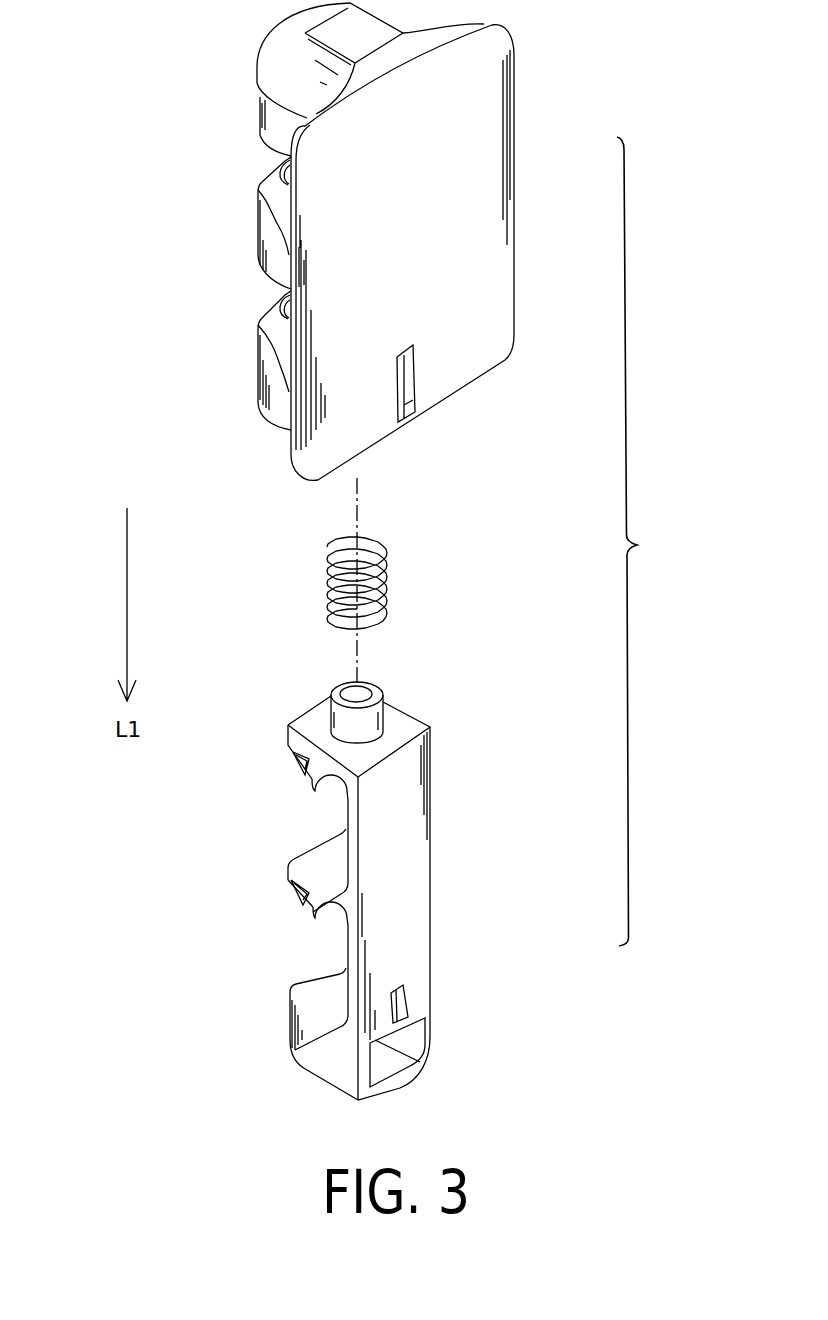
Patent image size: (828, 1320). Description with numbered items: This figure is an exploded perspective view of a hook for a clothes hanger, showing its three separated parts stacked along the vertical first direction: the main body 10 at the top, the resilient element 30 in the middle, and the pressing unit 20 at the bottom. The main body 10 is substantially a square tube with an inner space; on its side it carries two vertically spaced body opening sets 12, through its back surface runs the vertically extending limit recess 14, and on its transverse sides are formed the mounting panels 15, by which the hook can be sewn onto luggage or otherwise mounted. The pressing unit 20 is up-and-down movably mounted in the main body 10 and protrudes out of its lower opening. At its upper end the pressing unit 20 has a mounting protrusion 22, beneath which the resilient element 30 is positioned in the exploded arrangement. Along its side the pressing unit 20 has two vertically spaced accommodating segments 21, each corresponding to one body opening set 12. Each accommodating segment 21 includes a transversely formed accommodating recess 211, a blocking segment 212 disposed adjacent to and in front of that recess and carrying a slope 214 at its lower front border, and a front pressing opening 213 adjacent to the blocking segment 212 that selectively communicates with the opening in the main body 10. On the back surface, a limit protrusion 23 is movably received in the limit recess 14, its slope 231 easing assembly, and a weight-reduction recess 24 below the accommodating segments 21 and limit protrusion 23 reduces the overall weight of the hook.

The main body 10 is at (402, 241).
The body opening set 12 is at (266, 153).
The limit recess 14 is at (410, 378).
The mounting panel 15 is at (516, 198).
The pressing unit 20 is at (351, 877).
The accommodating segment 21 is at (342, 912).
The mounting protrusion 22 is at (377, 690).
The limit protrusion 23 is at (450, 990).
The weight-reduction recess 24 is at (409, 1063).
The resilient element 30 is at (384, 542).
The accommodating recess 211 is at (342, 862).
The blocking segment 212 is at (286, 766).
The front pressing opening 213 is at (248, 873).
The slope 214 is at (294, 778).
The slope 231 is at (408, 1012).